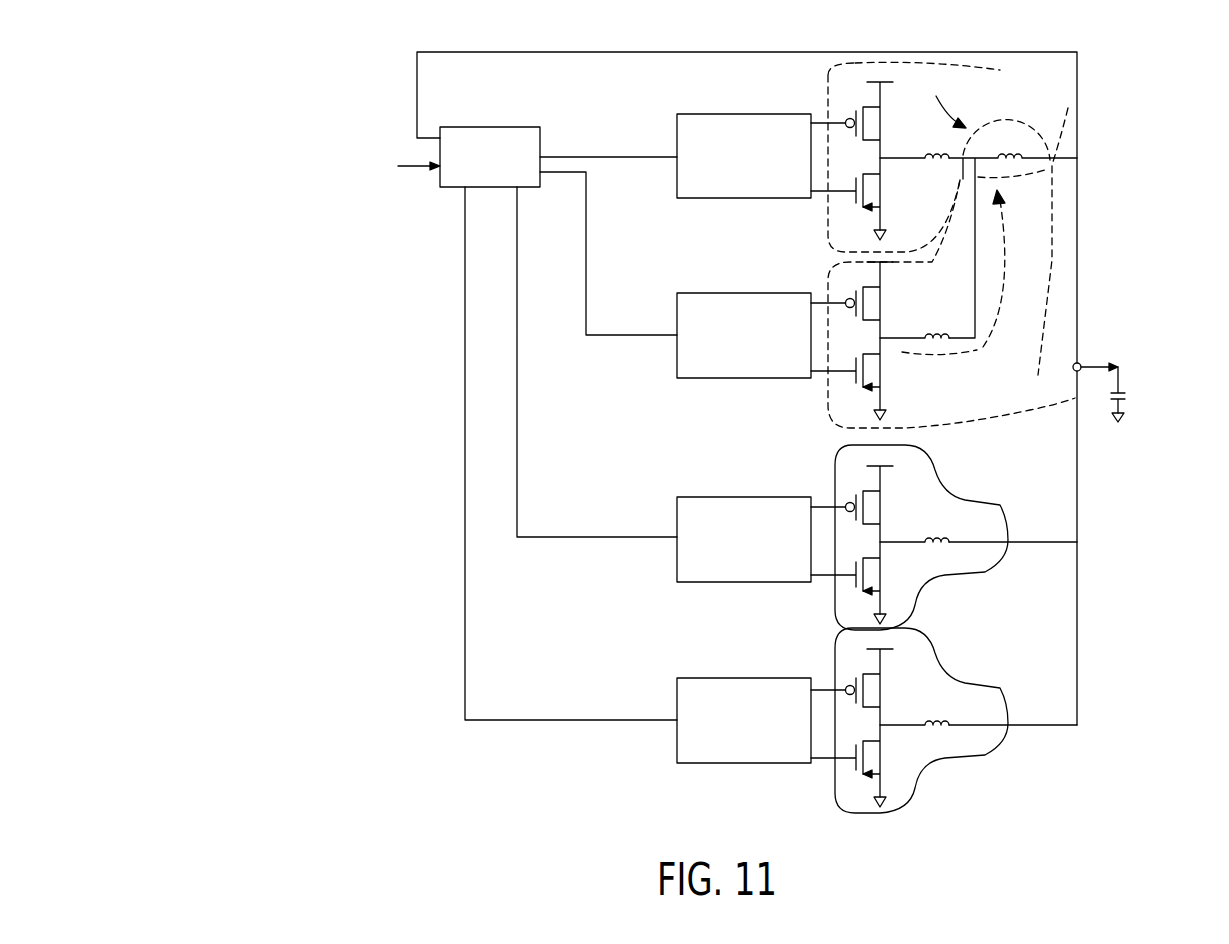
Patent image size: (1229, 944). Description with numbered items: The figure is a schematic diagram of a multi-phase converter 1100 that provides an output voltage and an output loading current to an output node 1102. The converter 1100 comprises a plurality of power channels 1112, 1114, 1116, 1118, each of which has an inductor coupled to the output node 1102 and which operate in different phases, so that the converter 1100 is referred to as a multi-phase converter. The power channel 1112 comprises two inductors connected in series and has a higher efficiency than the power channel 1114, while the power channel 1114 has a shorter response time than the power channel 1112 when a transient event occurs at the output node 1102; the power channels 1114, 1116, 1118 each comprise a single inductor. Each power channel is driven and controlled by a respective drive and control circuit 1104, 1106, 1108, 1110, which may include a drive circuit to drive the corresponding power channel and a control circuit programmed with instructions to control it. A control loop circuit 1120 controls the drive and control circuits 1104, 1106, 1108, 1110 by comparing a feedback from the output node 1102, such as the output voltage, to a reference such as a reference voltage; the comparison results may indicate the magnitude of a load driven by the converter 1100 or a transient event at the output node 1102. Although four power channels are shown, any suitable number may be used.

The multi-phase converter 1100 is at (216, 204).
The output node 1102 is at (1080, 364).
The drive and control circuit 1104 is at (702, 114).
The drive and control circuit 1106 is at (702, 293).
The drive and control circuit 1108 is at (702, 497).
The drive and control circuit 1110 is at (702, 678).
The power channel 1112 is at (998, 68).
The power channel 1114 is at (1052, 248).
The power channel 1116 is at (975, 500).
The power channel 1118 is at (950, 683).
The control loop circuit 1120 is at (475, 127).